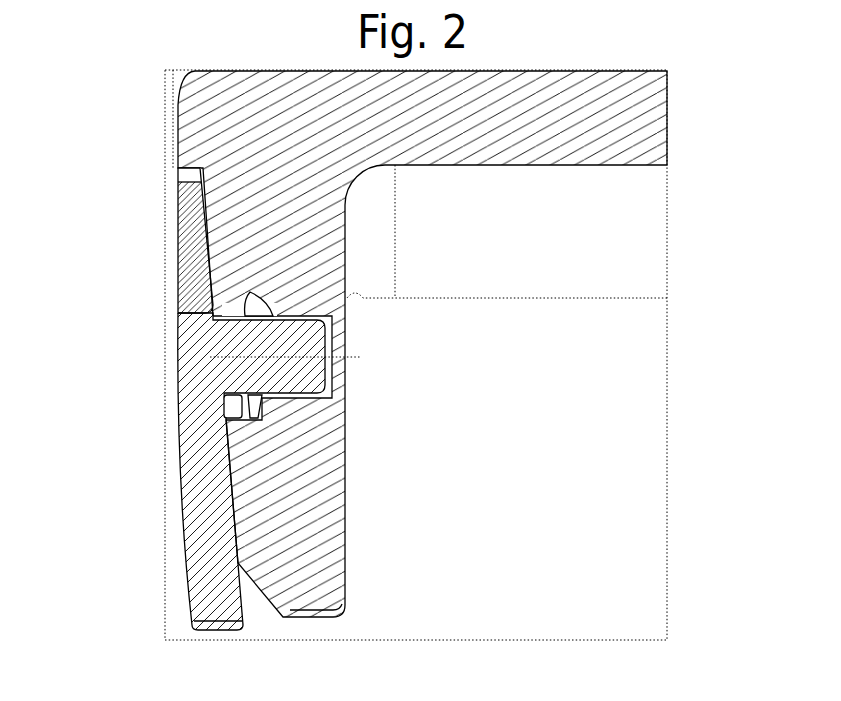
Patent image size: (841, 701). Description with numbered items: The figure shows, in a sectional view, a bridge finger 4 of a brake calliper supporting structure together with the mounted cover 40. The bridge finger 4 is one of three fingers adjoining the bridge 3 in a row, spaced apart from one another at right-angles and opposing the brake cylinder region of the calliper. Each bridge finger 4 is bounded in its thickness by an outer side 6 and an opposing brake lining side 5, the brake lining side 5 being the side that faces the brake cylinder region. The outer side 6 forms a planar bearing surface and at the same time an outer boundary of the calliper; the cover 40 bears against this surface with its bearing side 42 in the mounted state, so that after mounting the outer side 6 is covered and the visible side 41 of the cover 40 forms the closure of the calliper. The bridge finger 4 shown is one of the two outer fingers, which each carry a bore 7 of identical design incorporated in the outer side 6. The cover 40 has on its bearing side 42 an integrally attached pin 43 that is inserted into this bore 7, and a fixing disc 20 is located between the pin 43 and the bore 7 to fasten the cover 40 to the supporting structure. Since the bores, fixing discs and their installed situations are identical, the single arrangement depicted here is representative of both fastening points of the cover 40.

The bridge 3 is at (537, 128).
The bridge finger 4 is at (272, 245).
The brake lining side 5 is at (363, 464).
The outer side 6 is at (192, 243).
The bore 7 is at (390, 358).
The fixing disc 20 is at (250, 310).
The cover 40 is at (200, 455).
The visible side 41 is at (163, 423).
The bearing side 42 is at (256, 507).
The pin 43 is at (275, 375).